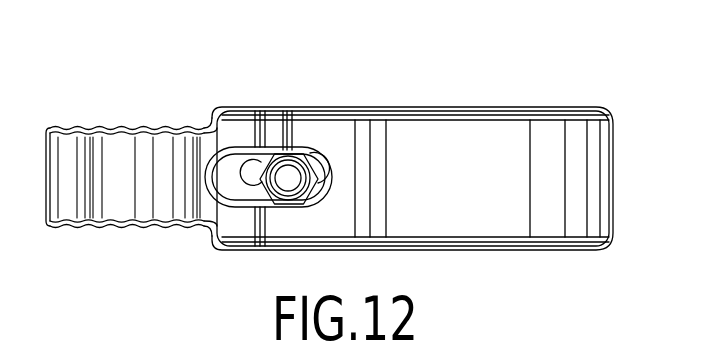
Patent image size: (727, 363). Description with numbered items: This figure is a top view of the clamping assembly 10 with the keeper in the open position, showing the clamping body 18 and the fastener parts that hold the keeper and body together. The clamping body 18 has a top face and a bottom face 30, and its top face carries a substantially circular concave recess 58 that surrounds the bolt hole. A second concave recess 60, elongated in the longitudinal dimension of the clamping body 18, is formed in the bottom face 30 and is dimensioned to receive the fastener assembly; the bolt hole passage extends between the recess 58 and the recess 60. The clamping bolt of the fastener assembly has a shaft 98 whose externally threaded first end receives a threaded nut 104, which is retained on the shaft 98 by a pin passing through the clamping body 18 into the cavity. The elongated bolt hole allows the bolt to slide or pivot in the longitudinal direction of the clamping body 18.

The clamping assembly 10 is at (127, 101).
The clamping body 18 is at (571, 256).
The bottom face 30 is at (468, 218).
The concave recess 58 is at (256, 165).
The concave recess 60 is at (315, 158).
The shaft 98 is at (287, 176).
The threaded nut 104 is at (309, 170).